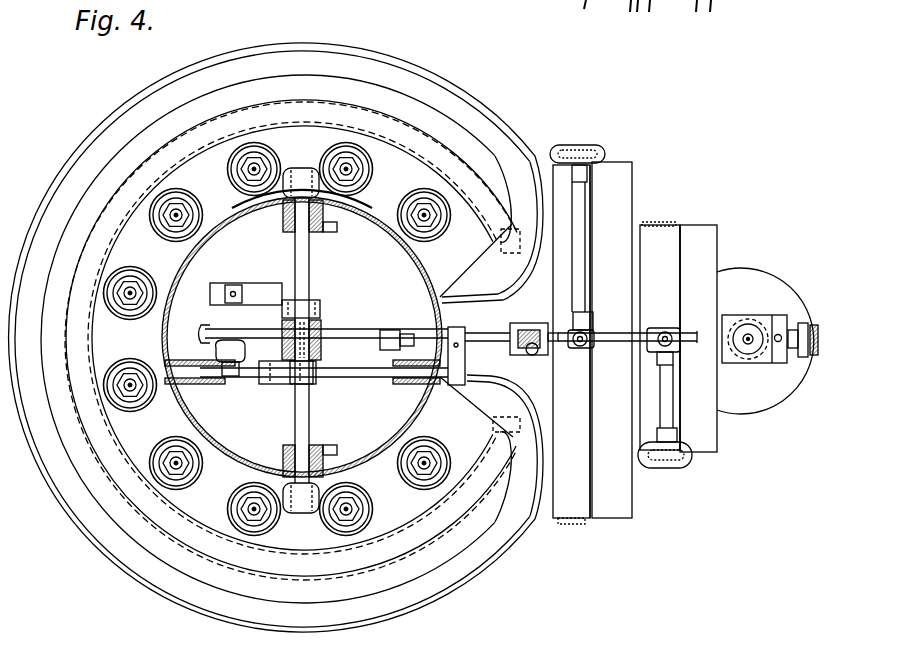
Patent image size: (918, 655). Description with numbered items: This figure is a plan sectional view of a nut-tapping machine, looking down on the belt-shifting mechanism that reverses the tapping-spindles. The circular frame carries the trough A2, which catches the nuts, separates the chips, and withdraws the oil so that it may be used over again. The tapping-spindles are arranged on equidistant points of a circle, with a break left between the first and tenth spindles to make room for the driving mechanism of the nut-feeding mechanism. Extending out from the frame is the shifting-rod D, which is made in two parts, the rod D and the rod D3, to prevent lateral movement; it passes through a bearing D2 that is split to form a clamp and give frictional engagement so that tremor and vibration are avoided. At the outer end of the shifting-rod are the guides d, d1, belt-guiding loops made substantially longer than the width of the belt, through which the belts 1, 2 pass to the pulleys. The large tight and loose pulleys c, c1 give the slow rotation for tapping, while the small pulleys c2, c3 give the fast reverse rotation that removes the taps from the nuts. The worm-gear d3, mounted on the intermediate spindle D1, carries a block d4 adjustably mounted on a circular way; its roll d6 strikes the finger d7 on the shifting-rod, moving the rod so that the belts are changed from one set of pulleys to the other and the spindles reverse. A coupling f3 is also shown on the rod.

The trough A2 is at (72, 181).
The spindle D1 is at (307, 417).
The bearing D2 is at (252, 285).
The shifting-rod D is at (485, 340).
The rod D3 is at (332, 368).
The block d4 is at (248, 367).
The roll d6 is at (233, 377).
The finger d7 is at (300, 384).
The worm-gear d3 is at (365, 353).
The pulley c is at (562, 170).
The pulley c1 is at (622, 165).
The belt 1 is at (583, 152).
The guide d is at (557, 153).
The coupling f3 is at (566, 305).
The pulley c2 is at (658, 235).
The pulley c3 is at (712, 232).
The belt 2 is at (673, 223).
The guide d1 is at (672, 463).